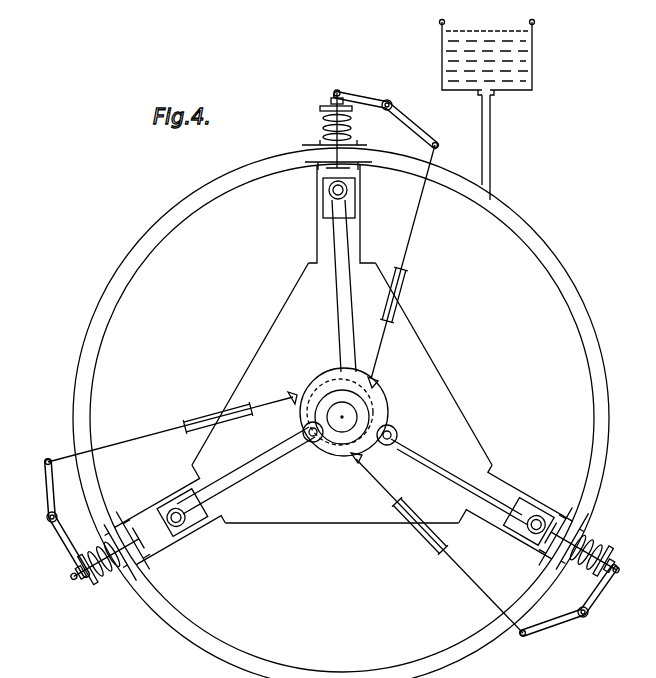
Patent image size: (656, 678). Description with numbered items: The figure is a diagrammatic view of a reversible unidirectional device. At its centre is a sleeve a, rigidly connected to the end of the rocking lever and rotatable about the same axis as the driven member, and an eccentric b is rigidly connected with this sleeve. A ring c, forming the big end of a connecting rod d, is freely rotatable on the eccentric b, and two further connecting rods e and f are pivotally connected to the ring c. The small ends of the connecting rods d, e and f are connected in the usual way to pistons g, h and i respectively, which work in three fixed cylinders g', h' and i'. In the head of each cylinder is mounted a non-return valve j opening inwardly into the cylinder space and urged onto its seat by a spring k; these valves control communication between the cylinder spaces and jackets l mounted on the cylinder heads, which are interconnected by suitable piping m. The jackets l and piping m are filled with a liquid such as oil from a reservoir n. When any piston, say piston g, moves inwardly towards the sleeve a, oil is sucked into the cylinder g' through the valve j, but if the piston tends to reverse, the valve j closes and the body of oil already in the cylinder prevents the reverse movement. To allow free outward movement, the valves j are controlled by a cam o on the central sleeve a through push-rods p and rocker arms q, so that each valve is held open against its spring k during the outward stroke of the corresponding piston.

The sleeve a is at (338, 440).
The eccentric b is at (382, 415).
The ring c is at (330, 375).
The connecting rod d is at (337, 321).
The connecting rod e is at (452, 466).
The connecting rod f is at (258, 470).
The piston g is at (318, 199).
The cylinder g' is at (354, 214).
The piston h is at (529, 508).
The cylinder h' is at (518, 518).
The piston i is at (182, 527).
The cylinder i' is at (166, 518).
The non-return valve j is at (306, 148).
The spring k is at (321, 118).
The jacket l is at (356, 141).
The piping m is at (93, 347).
The reservoir n is at (533, 70).
The cam o is at (385, 407).
The push-rod p is at (413, 234).
The rocker arm q is at (413, 114).